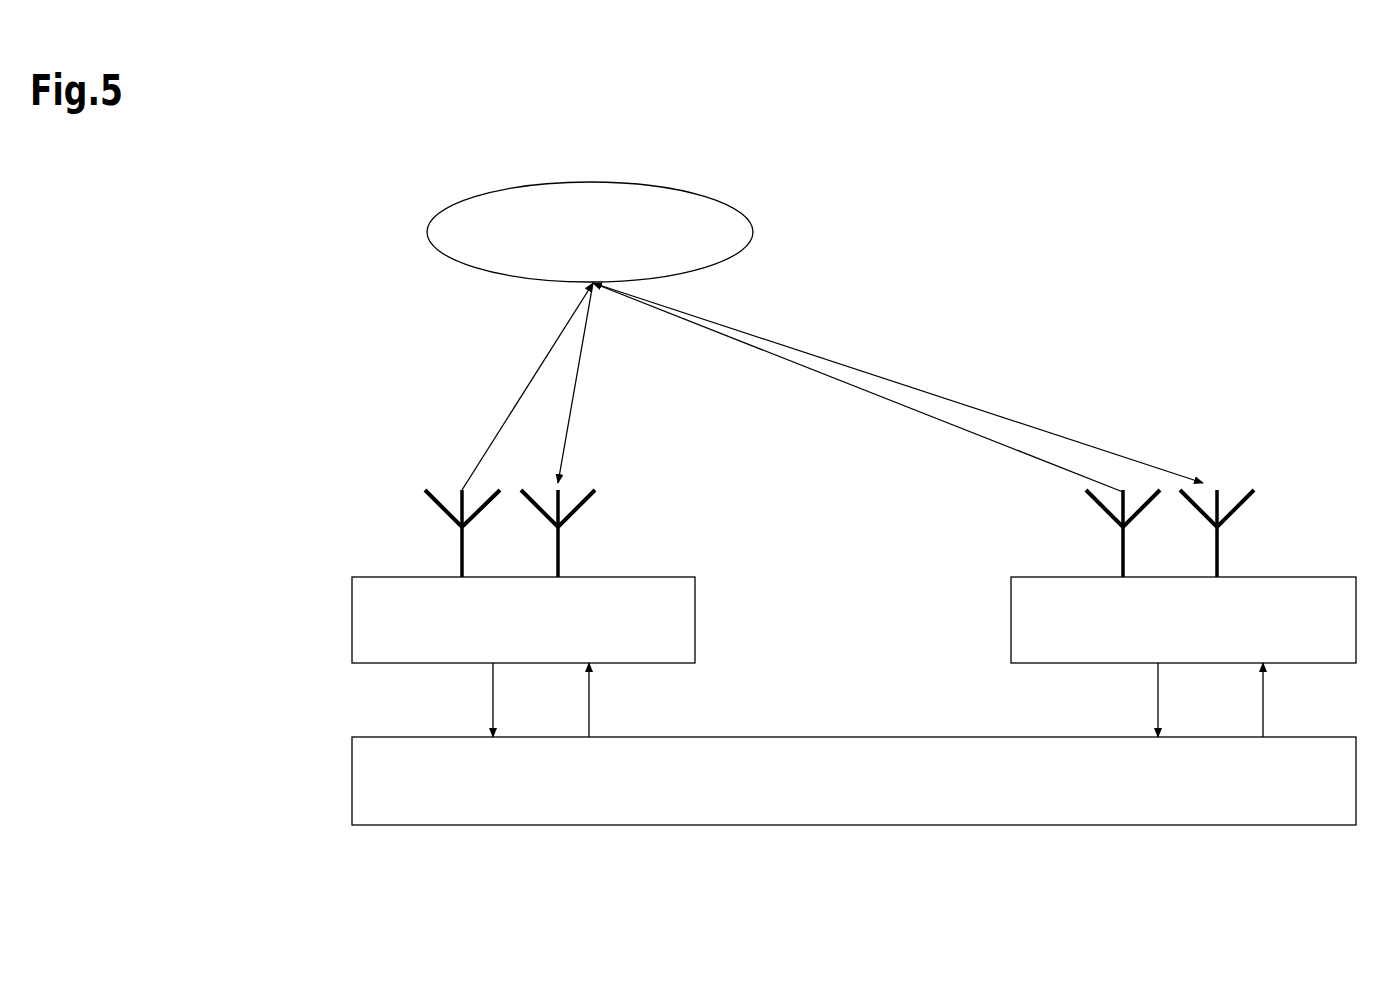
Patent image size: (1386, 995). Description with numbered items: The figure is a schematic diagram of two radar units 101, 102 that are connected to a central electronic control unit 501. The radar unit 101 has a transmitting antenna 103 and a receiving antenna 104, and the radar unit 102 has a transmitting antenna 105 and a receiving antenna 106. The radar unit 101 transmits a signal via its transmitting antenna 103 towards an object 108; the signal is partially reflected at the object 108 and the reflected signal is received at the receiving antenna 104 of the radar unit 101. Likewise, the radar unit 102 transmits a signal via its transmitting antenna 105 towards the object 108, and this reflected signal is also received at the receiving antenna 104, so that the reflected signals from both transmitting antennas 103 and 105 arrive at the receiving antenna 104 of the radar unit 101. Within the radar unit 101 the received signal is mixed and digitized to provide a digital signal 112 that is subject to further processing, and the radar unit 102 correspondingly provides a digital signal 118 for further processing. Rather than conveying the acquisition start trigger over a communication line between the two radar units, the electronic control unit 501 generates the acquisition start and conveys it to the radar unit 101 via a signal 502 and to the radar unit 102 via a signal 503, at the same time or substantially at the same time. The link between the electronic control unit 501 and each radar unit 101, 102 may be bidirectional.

The object 108 is at (427, 232).
The radar unit 101 is at (352, 620).
The radar unit 102 is at (1011, 620).
The transmitting antenna 103 is at (458, 497).
The receiving antenna 104 is at (562, 497).
The transmitting antenna 105 is at (1119, 497).
The receiving antenna 106 is at (1222, 497).
The digital signal 112 is at (490, 693).
The digital signal 118 is at (1156, 693).
The electronic control unit 501 is at (352, 783).
The signal 502 is at (592, 718).
The signal 503 is at (1266, 718).